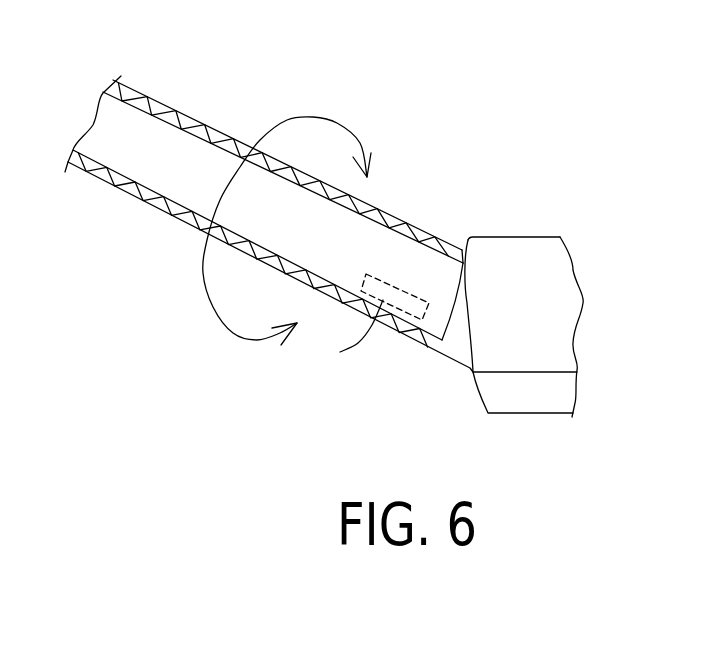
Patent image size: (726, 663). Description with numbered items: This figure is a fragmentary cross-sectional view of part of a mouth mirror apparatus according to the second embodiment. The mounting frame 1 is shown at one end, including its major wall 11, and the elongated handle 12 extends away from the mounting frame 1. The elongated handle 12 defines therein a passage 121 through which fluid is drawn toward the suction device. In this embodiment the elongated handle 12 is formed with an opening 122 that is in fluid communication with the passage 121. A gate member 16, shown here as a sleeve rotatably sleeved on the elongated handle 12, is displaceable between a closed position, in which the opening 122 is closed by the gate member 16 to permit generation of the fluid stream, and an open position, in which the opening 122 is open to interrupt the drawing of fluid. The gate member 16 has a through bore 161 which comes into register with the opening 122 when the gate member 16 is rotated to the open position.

The mounting frame 1 is at (632, 195).
The major wall 11 is at (498, 250).
The elongated handle 12 is at (138, 100).
The passage 121 is at (188, 152).
The opening 122 is at (378, 317).
The gate member 16 is at (170, 210).
The through bore 161 is at (400, 300).